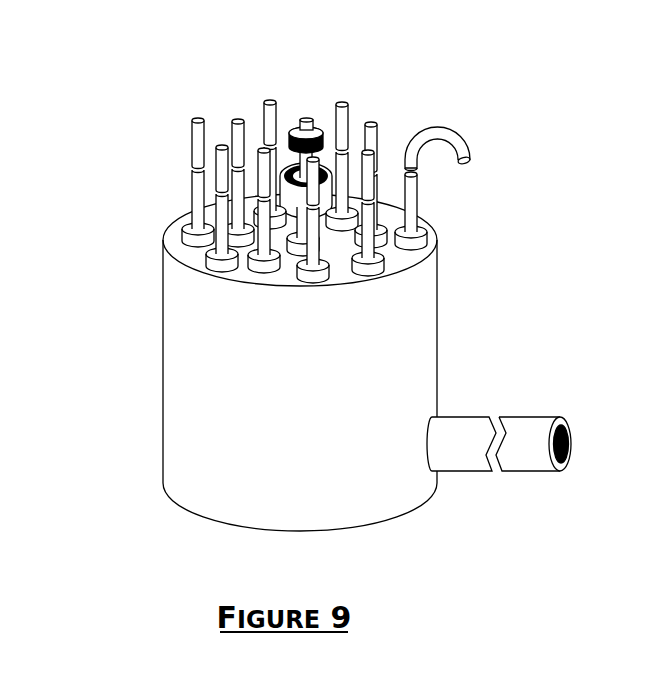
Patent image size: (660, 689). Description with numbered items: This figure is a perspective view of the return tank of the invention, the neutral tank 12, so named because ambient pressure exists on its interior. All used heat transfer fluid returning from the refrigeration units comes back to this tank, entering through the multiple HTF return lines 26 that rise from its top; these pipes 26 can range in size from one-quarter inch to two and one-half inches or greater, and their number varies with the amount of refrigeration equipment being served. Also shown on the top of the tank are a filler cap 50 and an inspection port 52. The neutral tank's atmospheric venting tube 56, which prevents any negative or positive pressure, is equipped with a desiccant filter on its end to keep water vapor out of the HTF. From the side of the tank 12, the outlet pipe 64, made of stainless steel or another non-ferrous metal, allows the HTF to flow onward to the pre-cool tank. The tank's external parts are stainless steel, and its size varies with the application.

The neutral tank 12 is at (378, 349).
The HTF return lines 26 is at (190, 136).
The filler cap 50 is at (314, 117).
The inspection port 52 is at (288, 163).
The atmospheric venting tube 56 is at (471, 139).
The outlet pipe 64 is at (533, 413).